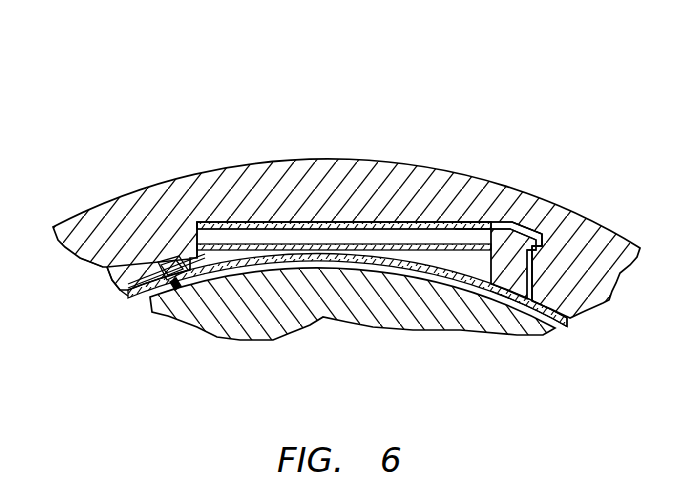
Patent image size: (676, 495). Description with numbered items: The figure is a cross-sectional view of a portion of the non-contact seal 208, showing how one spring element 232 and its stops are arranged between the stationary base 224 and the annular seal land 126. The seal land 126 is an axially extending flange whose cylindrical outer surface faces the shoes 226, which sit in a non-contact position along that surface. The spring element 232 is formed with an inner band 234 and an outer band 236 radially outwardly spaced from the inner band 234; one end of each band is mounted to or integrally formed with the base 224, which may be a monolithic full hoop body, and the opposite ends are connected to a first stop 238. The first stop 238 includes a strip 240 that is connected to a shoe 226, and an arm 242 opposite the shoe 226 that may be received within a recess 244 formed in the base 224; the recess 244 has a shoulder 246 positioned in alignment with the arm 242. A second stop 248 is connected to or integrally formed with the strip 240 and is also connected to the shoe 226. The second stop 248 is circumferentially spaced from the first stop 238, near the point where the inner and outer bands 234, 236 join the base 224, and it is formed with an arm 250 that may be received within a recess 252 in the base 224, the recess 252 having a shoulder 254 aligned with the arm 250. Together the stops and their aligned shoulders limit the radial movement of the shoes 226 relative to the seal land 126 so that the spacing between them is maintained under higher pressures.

The non-contact seal 208 is at (236, 106).
The stationary base 224 is at (100, 225).
The annular seal land 126 is at (453, 313).
The spring element 232 is at (466, 205).
The inner band 234 is at (242, 263).
The outer band 236 is at (352, 222).
The first stop 238 is at (512, 227).
The strip 240 is at (513, 284).
The arm 242 is at (560, 236).
The recess 244 is at (549, 243).
The shoulder 246 is at (541, 253).
The arm 250 is at (165, 258).
The recess 252 is at (103, 270).
The shoulder 254 is at (120, 272).
The shoe 226 is at (137, 307).
The second stop 248 is at (170, 288).